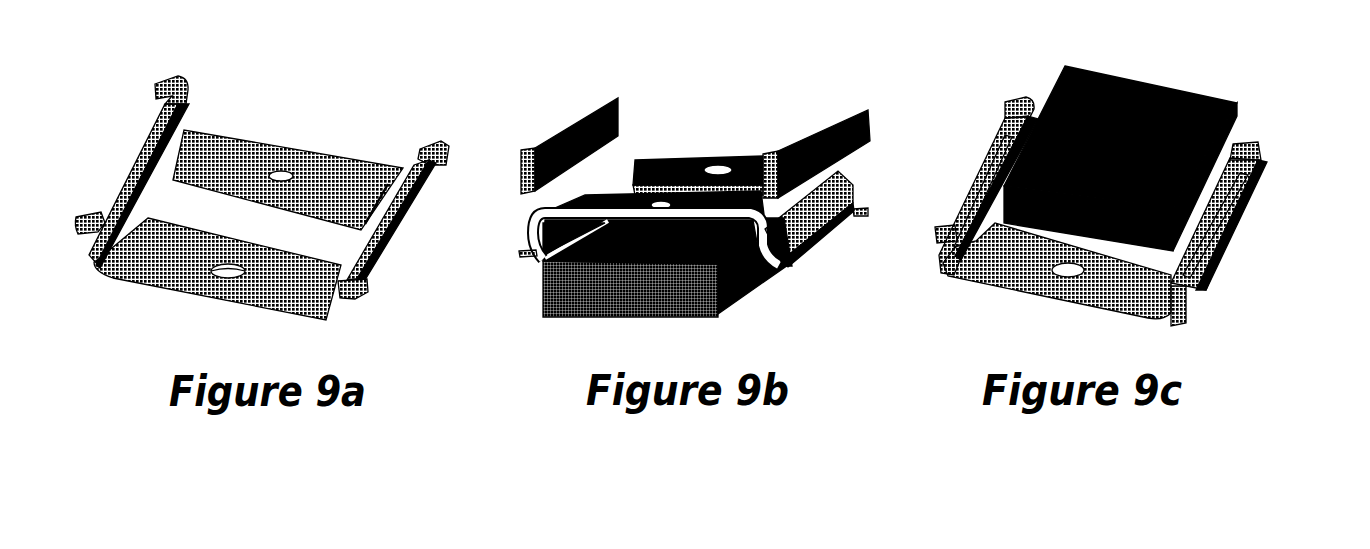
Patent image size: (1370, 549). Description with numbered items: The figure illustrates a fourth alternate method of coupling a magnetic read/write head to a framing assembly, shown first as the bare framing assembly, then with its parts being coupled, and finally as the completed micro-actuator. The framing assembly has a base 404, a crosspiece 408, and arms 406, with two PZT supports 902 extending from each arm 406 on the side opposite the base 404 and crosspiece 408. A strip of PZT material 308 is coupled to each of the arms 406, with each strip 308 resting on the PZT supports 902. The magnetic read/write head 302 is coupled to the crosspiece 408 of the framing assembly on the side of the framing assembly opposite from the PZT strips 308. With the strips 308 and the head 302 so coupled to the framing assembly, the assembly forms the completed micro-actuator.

In FIG. 9B, the magnetic read/write head 302 is at (665, 300).
In FIG. 9C, the magnetic read/write head 302 is at (1101, 74).
In FIG. 9B, the strip of PZT material 308 is at (590, 112).
In FIG. 9C, the strip of PZT material 308 is at (966, 165).
In FIG. 9A, the base 404 is at (145, 273).
In FIG. 9B, the base 404 is at (619, 188).
In FIG. 9C, the base 404 is at (1031, 278).
In FIG. 9A, the arm 406 is at (123, 158).
In FIG. 9B, the arm 406 is at (568, 195).
In FIG. 9C, the arm 406 is at (991, 140).
In FIG. 9A, the crosspiece 408 is at (266, 138).
In FIG. 9B, the crosspiece 408 is at (657, 150).
In FIG. 9A, the PZT support 902 is at (150, 67).
In FIG. 9B, the PZT support 902 is at (522, 252).
In FIG. 9C, the PZT support 902 is at (996, 92).